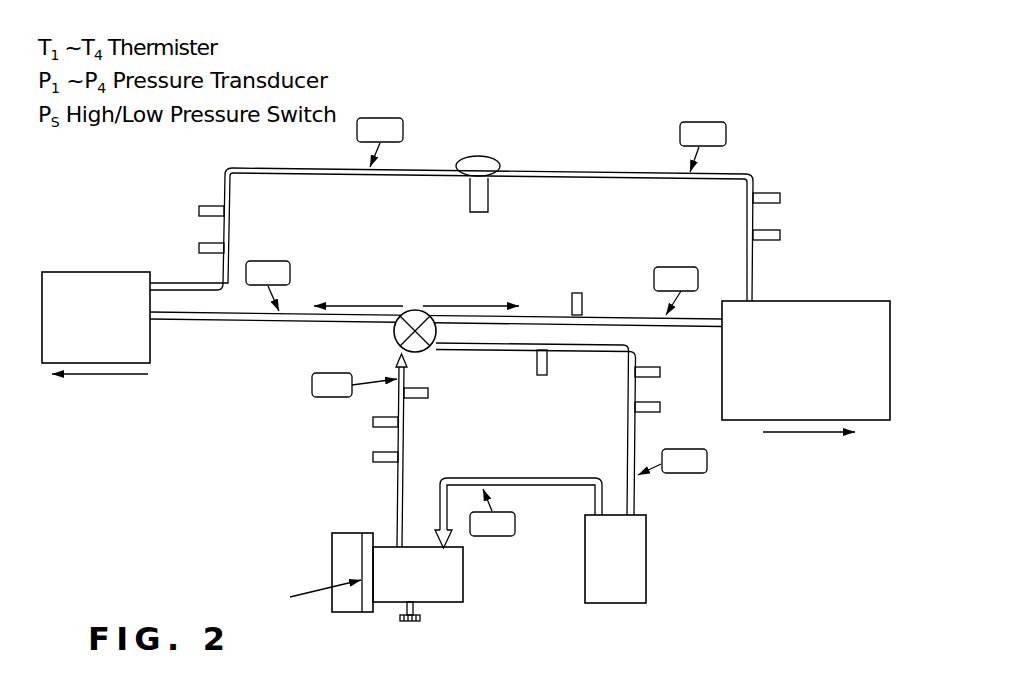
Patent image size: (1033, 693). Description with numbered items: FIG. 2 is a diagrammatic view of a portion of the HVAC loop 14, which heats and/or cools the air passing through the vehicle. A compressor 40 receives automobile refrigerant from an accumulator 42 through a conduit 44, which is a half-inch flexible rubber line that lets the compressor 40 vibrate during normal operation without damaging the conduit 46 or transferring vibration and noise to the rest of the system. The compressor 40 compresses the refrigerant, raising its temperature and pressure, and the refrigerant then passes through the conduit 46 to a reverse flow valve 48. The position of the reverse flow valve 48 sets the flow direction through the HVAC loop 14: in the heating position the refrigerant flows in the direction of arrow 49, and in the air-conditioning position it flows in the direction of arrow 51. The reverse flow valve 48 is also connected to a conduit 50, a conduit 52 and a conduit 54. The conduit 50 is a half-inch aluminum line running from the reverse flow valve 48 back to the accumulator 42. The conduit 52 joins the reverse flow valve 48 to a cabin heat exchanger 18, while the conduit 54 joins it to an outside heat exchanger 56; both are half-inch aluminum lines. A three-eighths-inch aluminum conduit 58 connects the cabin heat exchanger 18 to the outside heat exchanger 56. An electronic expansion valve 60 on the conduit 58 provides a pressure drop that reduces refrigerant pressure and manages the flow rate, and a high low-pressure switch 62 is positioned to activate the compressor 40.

The HVAC loop 14 is at (572, 150).
The cabin heat exchanger 18 is at (56, 283).
The compressor 40 is at (455, 589).
The accumulator 42 is at (630, 595).
The conduit 44 is at (556, 486).
The conduit 46 is at (397, 501).
The reverse flow valve 48 is at (393, 333).
The arrow 49 is at (345, 300).
The conduit 50 is at (600, 343).
The arrow 51 is at (495, 310).
The conduit 52 is at (299, 312).
The conduit 54 is at (705, 316).
The outside heat exchanger 56 is at (855, 310).
The conduit 58 is at (641, 172).
The electronic expansion valve 60 is at (478, 160).
The high low-pressure switch 62 is at (378, 460).